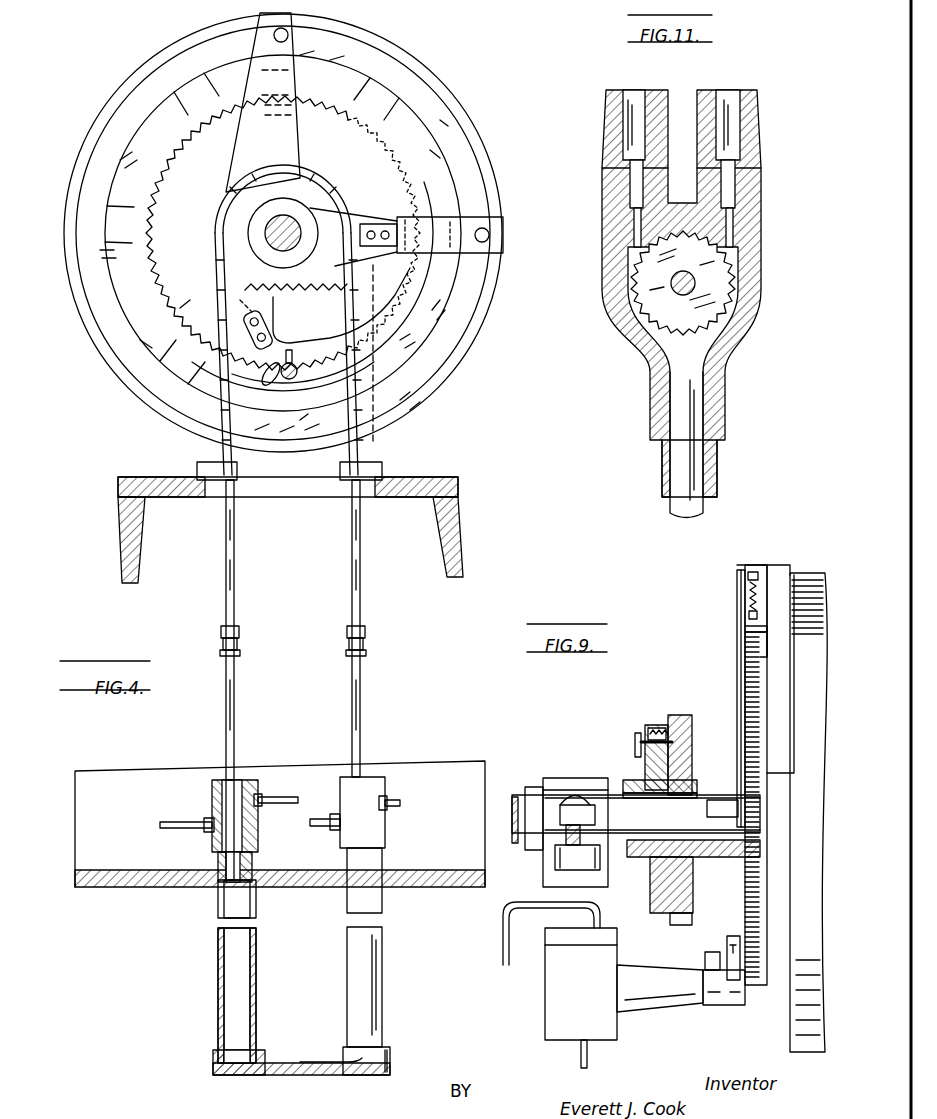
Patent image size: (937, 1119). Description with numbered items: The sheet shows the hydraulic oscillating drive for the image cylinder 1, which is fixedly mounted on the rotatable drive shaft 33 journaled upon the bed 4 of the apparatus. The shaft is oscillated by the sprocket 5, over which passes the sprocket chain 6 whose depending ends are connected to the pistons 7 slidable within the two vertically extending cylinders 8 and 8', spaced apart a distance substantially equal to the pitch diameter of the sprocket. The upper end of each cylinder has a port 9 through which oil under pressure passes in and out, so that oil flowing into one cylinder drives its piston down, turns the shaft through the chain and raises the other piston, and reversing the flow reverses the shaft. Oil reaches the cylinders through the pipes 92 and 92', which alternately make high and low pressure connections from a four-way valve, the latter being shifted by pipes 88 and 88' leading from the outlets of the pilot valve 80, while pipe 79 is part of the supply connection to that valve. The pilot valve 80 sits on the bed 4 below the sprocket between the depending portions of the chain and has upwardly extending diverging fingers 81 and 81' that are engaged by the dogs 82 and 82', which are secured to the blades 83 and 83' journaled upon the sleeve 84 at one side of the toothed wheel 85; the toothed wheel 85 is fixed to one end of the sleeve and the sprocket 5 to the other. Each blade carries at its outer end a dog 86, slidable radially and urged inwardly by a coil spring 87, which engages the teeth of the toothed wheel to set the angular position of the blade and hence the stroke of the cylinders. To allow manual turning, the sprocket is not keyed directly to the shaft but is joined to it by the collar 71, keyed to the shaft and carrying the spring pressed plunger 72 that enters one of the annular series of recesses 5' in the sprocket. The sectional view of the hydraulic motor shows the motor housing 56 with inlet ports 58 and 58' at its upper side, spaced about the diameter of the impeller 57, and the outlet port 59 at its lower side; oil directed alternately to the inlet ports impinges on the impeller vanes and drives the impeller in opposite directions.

In FIG. 4, the cylinder carrying the image 1 is at (452, 112).
In FIG. 9, the cylinder carrying the image 1 is at (804, 572).
In FIG. 4, the bed 4 is at (416, 497).
In FIG. 4, the sprocket 5 is at (327, 275).
In FIG. 9, the sprocket 5 is at (668, 744).
In FIG. 9, the spaced recesses 5' is at (673, 758).
In FIG. 4, the sprocket chain 6 is at (361, 571).
In FIG. 4, the pistons 7 is at (256, 800).
In FIG. 4, the cylinder 8 is at (301, 1001).
In FIG. 4, the cylinder 8' is at (359, 1001).
In FIG. 4, the port 9 is at (212, 812).
In FIG. 4, the drive shaft 33 is at (301, 234).
In FIG. 9, the drive shaft 33 is at (514, 795).
In FIG. 11, the motor housing 56 is at (762, 273).
In FIG. 11, the impeller 57 is at (725, 306).
In FIG. 11, the inlet port 58 is at (756, 168).
In FIG. 11, the inlet port 58' is at (600, 170).
In FIG. 11, the outlet port 59 is at (692, 390).
In FIG. 9, the collar 71 is at (652, 724).
In FIG. 9, the spring pressed plunger 72 is at (634, 742).
In FIG. 9, the pipe 79 is at (588, 1049).
In FIG. 9, the pilot valve 80 is at (640, 972).
In FIG. 4, the finger 81 is at (303, 356).
In FIG. 9, the finger 81 is at (704, 948).
In FIG. 4, the finger 81' is at (260, 383).
In FIG. 9, the finger 81' is at (733, 941).
In FIG. 4, the dog 82 is at (313, 269).
In FIG. 9, the dog 82 is at (721, 776).
In FIG. 9, the dog 82' is at (725, 1003).
In FIG. 4, the blade 83 is at (283, 320).
In FIG. 4, the blade 83' is at (277, 102).
In FIG. 9, the sleeve 84 is at (693, 882).
In FIG. 4, the toothed wheel 85 is at (283, 233).
In FIG. 9, the toothed wheel 85 is at (768, 700).
In FIG. 4, the dog 86 is at (298, 96).
In FIG. 9, the dog 86 is at (764, 634).
In FIG. 9, the coil spring 87 is at (757, 596).
In FIG. 9, the pipe 88 is at (581, 984).
In FIG. 9, the pipe 88' is at (551, 918).
In FIG. 4, the pipe 92 is at (187, 836).
In FIG. 4, the pipe 92' is at (345, 845).